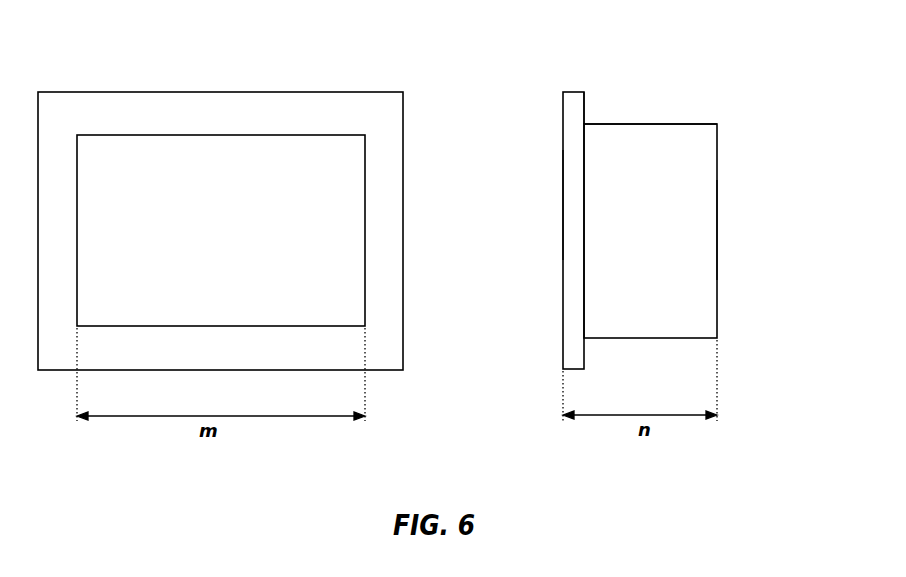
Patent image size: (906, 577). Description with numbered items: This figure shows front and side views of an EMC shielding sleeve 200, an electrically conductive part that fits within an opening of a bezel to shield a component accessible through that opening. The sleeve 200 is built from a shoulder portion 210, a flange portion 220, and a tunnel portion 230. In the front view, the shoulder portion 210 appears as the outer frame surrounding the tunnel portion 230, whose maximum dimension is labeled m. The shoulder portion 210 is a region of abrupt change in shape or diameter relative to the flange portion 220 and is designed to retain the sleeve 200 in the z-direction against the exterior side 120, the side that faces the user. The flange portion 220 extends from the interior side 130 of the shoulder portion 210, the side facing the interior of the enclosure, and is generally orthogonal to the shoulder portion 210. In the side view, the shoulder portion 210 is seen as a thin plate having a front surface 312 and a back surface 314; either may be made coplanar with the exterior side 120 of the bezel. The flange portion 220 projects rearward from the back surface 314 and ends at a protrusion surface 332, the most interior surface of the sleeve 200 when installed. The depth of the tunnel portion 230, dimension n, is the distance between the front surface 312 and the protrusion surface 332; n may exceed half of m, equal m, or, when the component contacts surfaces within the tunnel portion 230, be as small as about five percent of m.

The exterior side 120 is at (441, 193).
The interior side 130 is at (781, 80).
The EMC shielding sleeve 200 is at (312, 52).
The shoulder portion 210 is at (130, 110).
The flange portion 220 is at (712, 307).
The tunnel portion 230 is at (229, 240).
The front surface 312 is at (561, 210).
The back surface 314 is at (590, 106).
The protrusion surface 332 is at (720, 224).